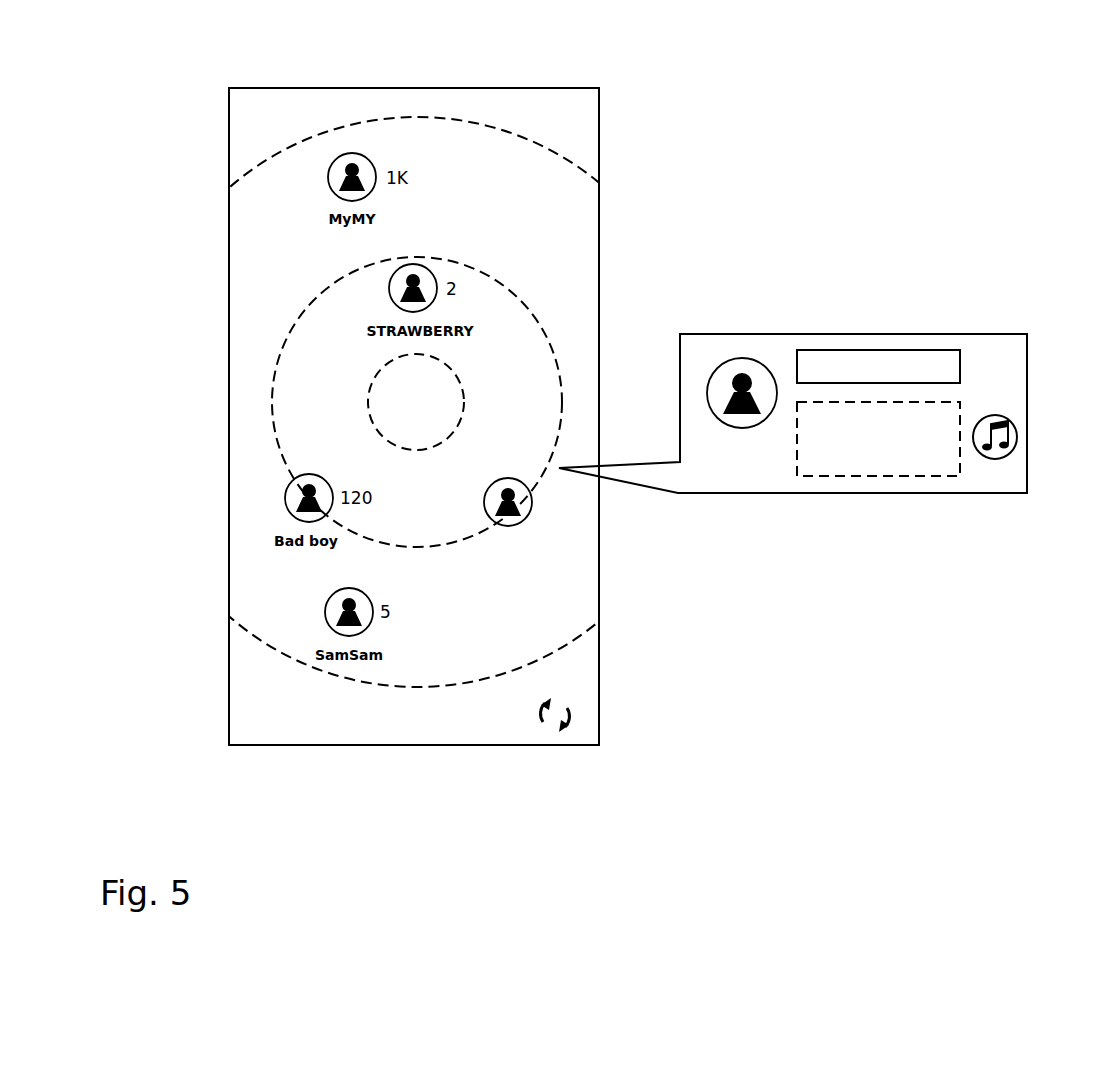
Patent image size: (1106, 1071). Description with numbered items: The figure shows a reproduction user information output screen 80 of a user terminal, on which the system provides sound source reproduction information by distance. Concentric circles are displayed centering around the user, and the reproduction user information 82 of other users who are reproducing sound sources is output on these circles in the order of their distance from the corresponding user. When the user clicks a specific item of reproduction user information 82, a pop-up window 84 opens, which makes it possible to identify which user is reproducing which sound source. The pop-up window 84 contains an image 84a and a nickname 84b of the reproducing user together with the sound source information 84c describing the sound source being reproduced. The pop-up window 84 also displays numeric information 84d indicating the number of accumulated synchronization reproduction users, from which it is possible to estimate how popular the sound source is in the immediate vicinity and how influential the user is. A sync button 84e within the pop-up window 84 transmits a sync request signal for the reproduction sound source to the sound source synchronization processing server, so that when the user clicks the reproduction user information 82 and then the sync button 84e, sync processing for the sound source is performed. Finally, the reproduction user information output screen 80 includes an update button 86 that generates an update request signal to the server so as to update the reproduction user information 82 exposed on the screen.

The reproduction user information output screen 80 is at (534, 110).
The reproduction user information 82 is at (505, 478).
The pop-up window 84 is at (986, 356).
The image 84a is at (741, 357).
The nickname 84b is at (722, 474).
The sound source information 84c is at (871, 478).
The numeric information 84d is at (880, 350).
The sync button 84e is at (990, 460).
The update button 86 is at (550, 740).